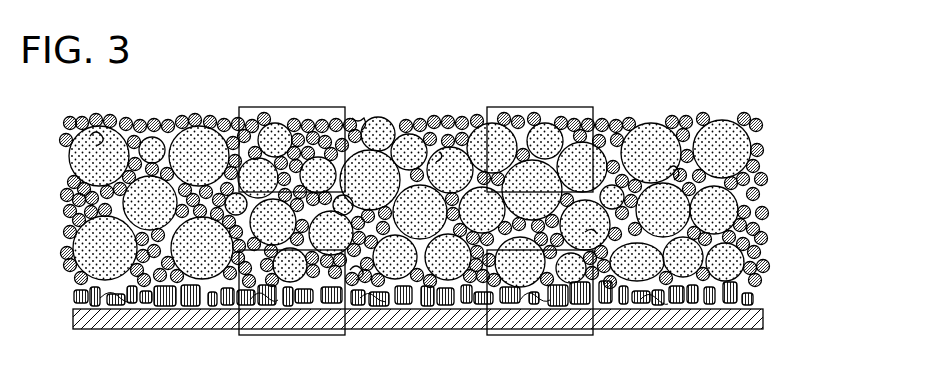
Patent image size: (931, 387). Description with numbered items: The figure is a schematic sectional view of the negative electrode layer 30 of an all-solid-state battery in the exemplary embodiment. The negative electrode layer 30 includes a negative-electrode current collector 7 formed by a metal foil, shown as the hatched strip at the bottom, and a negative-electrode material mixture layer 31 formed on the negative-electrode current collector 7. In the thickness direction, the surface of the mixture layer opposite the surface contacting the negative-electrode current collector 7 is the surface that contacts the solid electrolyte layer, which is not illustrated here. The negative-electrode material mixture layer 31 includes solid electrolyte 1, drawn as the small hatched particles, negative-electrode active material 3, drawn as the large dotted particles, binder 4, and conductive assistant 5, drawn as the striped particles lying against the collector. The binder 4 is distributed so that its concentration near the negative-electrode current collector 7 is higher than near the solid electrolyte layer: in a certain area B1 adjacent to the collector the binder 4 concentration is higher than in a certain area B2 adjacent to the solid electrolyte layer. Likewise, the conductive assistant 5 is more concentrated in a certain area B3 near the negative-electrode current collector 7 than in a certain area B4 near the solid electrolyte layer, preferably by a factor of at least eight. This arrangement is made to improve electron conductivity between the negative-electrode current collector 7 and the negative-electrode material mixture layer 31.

The solid electrolyte 1 is at (80, 210).
The negative-electrode active material 3 is at (88, 155).
The binder 4 is at (358, 118).
The conductive assistant 5 is at (80, 296).
The negative-electrode current collector 7 is at (745, 323).
The negative electrode layer 30 is at (815, 113).
The negative-electrode material mixture layer 31 is at (768, 115).
The area B1 is at (305, 336).
The area B2 is at (270, 107).
The area B3 is at (548, 336).
The area B4 is at (535, 107).